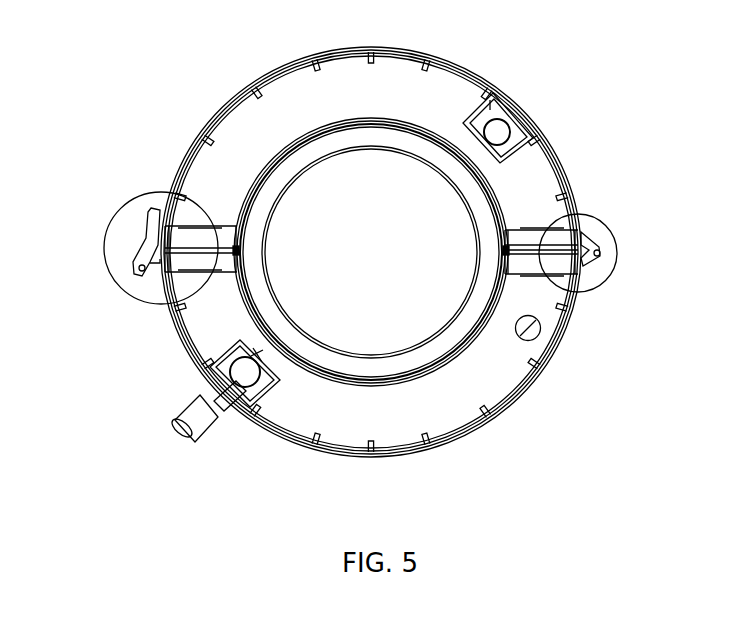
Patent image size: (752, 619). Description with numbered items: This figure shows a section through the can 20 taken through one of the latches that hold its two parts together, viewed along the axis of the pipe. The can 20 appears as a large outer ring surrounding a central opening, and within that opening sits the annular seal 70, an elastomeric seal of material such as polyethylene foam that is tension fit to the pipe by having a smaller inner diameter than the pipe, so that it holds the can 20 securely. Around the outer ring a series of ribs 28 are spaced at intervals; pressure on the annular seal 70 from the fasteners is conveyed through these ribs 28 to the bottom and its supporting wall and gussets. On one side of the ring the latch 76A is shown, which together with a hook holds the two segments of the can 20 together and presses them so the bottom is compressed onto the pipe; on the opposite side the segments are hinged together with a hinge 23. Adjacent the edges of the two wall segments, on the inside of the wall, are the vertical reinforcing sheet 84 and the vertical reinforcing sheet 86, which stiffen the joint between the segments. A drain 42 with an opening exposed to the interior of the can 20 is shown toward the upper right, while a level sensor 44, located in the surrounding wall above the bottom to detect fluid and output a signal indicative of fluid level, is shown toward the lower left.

The can 20 is at (568, 173).
The ribs 28 is at (318, 68).
The drain 42 is at (488, 108).
The level sensor 44 is at (190, 410).
The annular seal 70 is at (295, 167).
The vertical reinforcing sheet 84 is at (180, 272).
The vertical reinforcing sheet 86 is at (180, 233).
The latch 76A is at (150, 250).
The hinge 23 is at (600, 260).